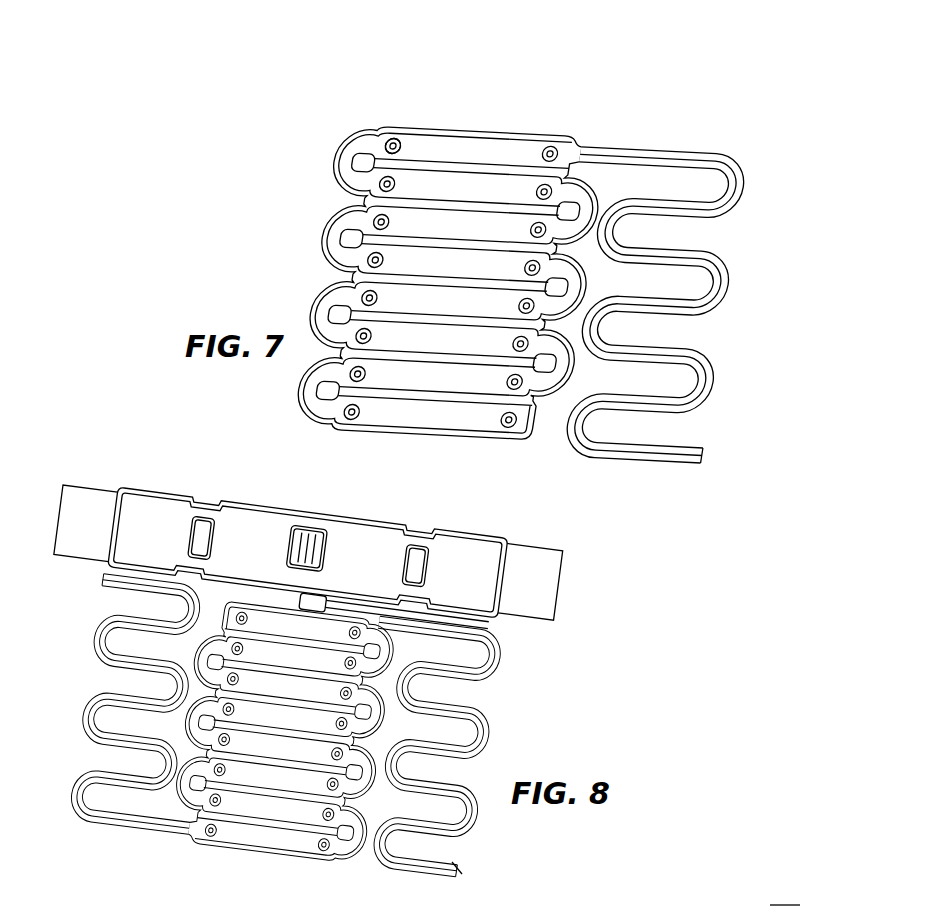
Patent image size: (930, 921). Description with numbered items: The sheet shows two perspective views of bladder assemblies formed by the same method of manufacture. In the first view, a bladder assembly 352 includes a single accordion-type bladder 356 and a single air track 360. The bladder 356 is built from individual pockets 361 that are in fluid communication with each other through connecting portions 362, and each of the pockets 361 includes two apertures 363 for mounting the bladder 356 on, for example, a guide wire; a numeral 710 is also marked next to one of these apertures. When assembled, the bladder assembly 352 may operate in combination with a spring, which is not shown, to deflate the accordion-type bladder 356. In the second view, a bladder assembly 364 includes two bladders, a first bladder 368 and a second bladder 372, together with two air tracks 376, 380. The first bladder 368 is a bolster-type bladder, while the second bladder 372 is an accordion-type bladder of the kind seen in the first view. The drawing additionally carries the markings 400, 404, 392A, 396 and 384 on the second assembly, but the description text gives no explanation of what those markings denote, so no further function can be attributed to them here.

In FIG. 7, the bladder assembly 352 is at (709, 75).
In FIG. 7, the accordion-type bladder 356 is at (478, 138).
In FIG. 7, the air track 360 is at (745, 182).
In FIG. 7, the pockets 361 is at (520, 185).
In FIG. 7, the connecting portions 362 is at (340, 160).
In FIG. 7, the apertures 363 is at (397, 139).
In FIG. 7, the mounting hole 710 is at (374, 110).
In FIG. 8, the bladder assembly 364 is at (688, 642).
In FIG. 8, the first bladder 368 is at (230, 498).
In FIG. 8, the second bladder 372 is at (232, 852).
In FIG. 8, the air track 376 is at (500, 733).
In FIG. 8, the air track 380 is at (112, 828).
In FIG. 8, the connector pad 400 is at (302, 920).
In FIG. 8, the window opening 404 is at (360, 920).
In FIG. 8, the trace 392A is at (394, 757).
In FIG. 8, the lead end 396 is at (458, 874).
In FIG. 8, the connector 384 is at (791, 913).